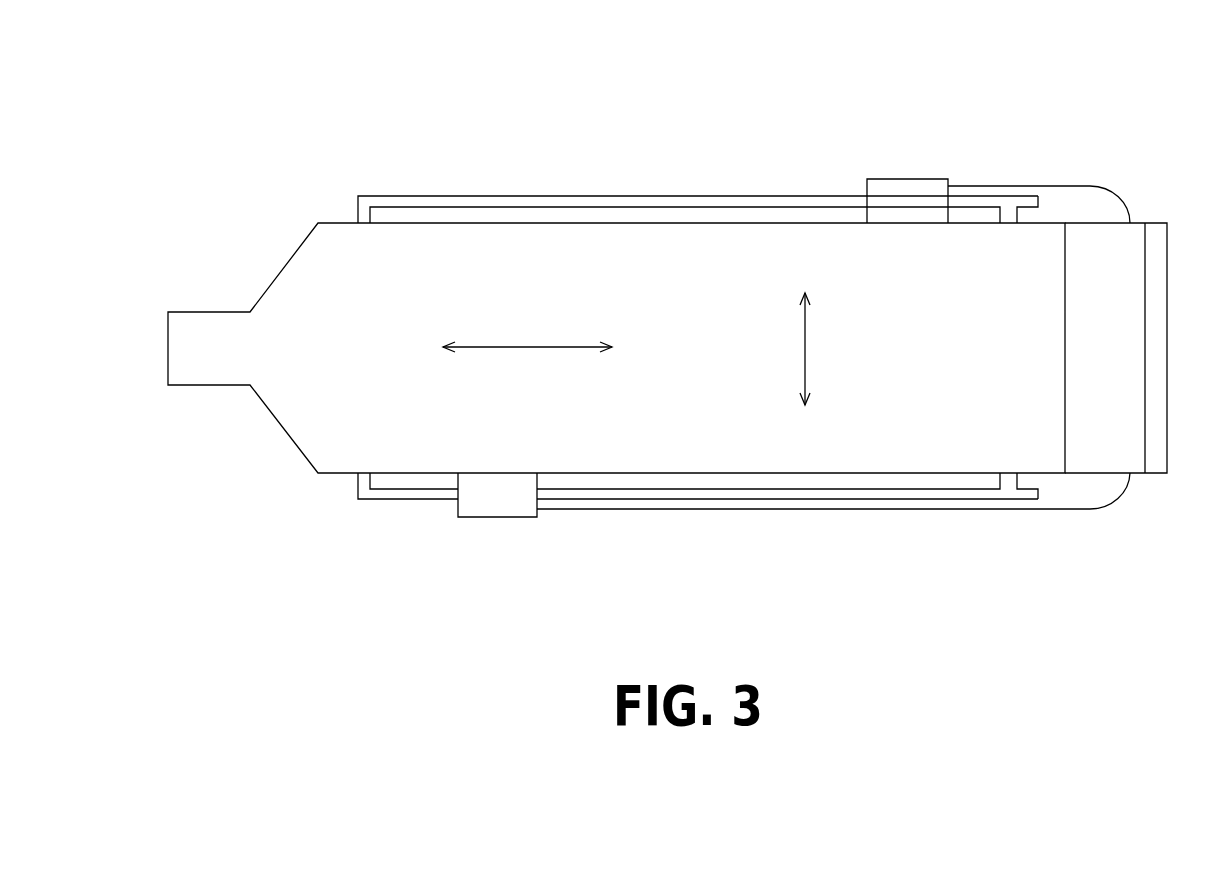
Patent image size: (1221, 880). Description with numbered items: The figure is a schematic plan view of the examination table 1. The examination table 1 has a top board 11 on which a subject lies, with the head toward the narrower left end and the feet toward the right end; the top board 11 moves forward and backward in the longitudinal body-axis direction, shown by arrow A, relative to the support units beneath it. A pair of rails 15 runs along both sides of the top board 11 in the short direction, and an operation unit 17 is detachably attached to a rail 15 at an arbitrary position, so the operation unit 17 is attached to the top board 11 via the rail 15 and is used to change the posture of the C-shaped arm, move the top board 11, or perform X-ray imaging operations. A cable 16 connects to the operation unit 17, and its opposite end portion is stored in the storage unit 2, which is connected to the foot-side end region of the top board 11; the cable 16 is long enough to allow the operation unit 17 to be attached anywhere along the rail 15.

The examination table 1 is at (790, 105).
The storage unit 2 is at (1080, 341).
The top board 11 is at (325, 425).
The rail 15 is at (620, 197).
The cable 16 is at (1093, 187).
The operation unit 17 is at (918, 186).